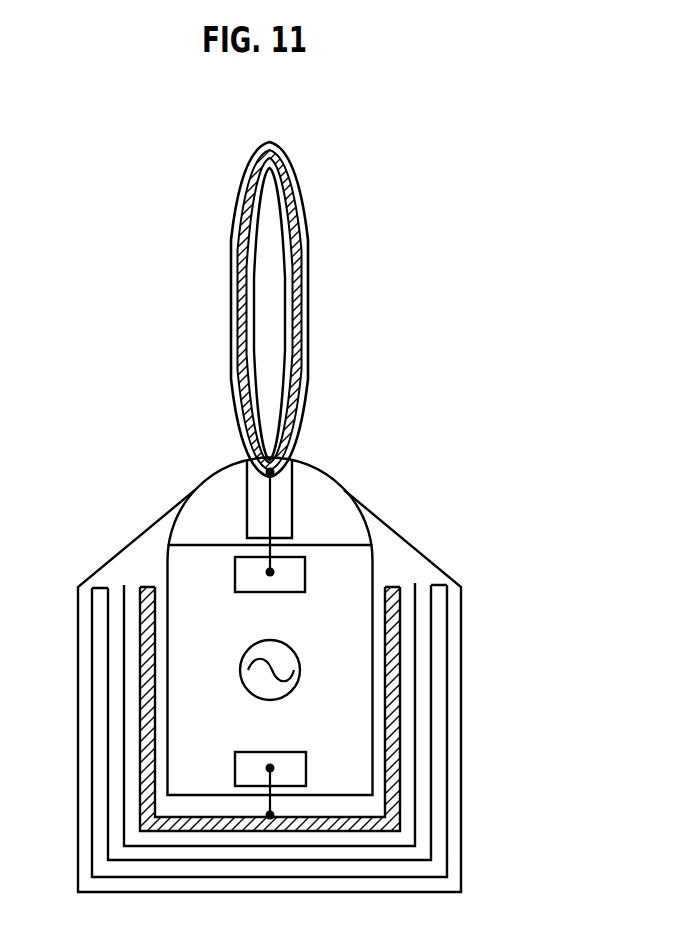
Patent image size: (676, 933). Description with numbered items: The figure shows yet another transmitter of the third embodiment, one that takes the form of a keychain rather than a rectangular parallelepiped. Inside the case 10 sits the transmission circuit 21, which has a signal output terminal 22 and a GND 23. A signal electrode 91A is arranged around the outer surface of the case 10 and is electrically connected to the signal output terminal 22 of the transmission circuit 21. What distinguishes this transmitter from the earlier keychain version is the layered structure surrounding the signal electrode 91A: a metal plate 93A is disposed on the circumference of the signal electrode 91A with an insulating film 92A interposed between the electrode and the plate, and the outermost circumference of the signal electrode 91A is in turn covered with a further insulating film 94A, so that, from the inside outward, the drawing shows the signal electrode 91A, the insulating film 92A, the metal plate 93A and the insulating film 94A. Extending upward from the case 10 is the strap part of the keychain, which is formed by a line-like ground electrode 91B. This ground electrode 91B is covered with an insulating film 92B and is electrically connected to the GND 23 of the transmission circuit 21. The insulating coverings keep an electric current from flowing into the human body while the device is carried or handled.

The case 10 is at (166, 558).
The transmission circuit 21 is at (300, 672).
The signal output terminal 22 is at (306, 768).
The GND 23 is at (305, 571).
The signal electrode 91A is at (393, 585).
The insulating film 92A is at (416, 585).
The metal plate 93A is at (448, 614).
The insulating film 94A is at (462, 662).
The ground electrode 91B is at (305, 307).
The insulating film 92B is at (305, 258).